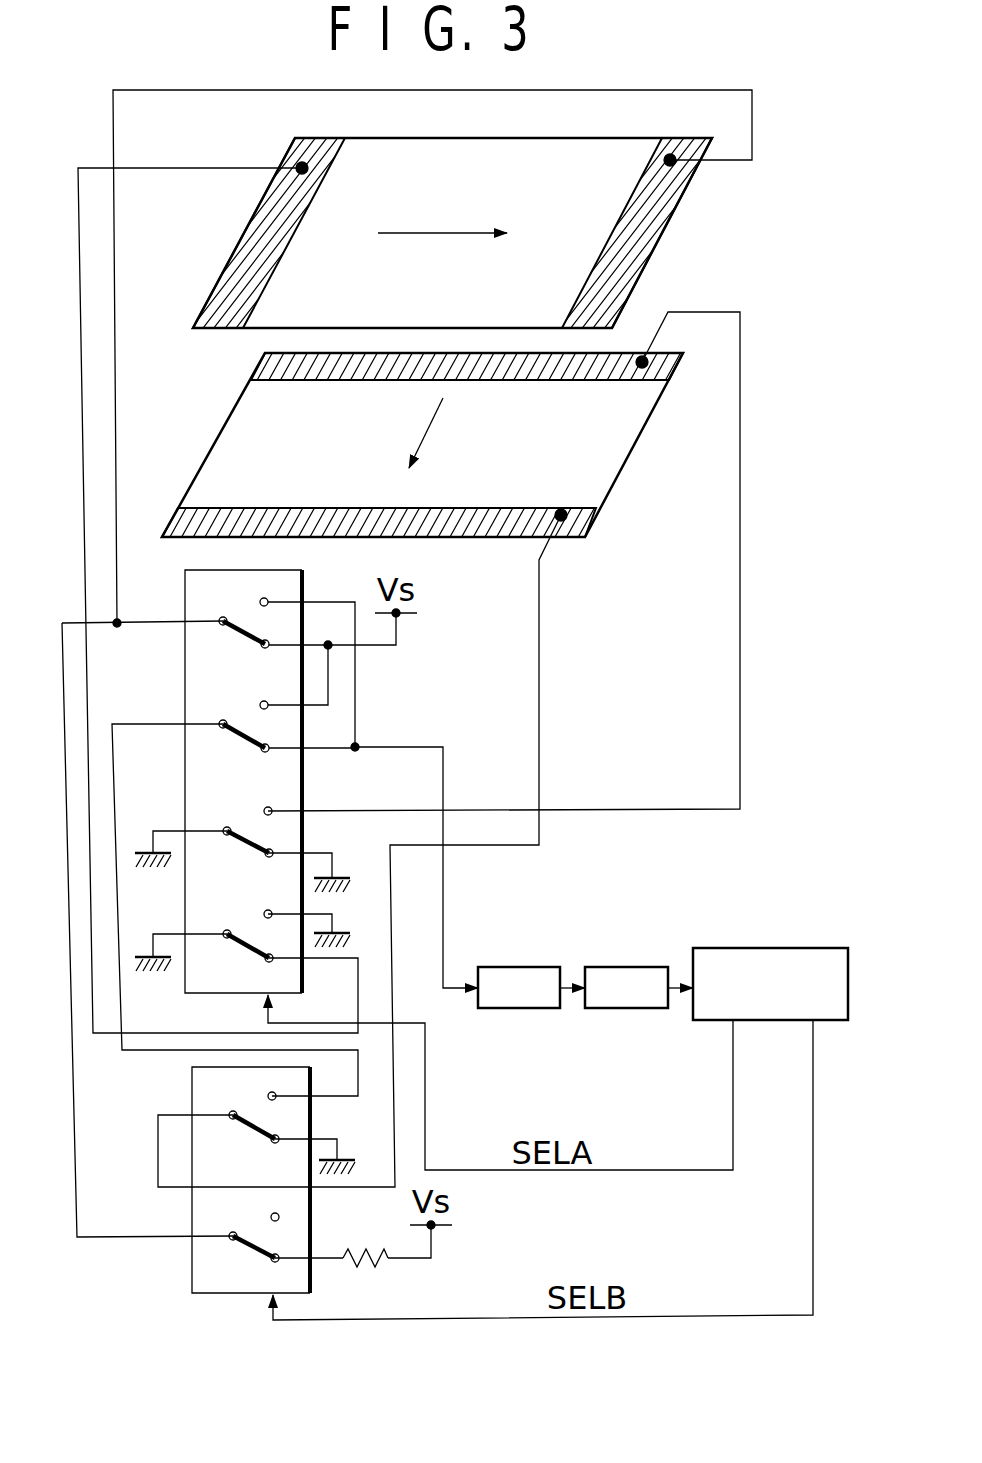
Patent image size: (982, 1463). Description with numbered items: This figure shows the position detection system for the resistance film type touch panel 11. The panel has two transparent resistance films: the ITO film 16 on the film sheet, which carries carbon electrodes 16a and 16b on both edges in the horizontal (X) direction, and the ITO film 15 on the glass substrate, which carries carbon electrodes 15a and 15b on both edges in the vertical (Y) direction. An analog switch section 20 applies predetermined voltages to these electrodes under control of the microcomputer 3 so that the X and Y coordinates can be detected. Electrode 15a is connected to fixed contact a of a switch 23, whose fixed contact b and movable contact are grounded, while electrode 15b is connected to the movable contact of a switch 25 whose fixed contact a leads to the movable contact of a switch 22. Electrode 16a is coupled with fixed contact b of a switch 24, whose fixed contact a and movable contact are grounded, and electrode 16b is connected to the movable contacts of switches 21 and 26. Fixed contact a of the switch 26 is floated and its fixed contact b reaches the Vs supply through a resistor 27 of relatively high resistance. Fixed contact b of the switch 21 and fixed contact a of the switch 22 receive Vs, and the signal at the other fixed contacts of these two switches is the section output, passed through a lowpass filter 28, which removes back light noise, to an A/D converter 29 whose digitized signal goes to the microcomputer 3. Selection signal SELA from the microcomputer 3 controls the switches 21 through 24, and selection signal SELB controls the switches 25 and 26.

The touch panel 11 is at (670, 247).
The ITO film 16 is at (485, 177).
The electrode 16a is at (293, 152).
The electrode 16b is at (670, 158).
The ITO film 15 is at (612, 459).
The electrode 15a is at (260, 366).
The electrode 15b is at (587, 518).
The analog switch section 20 is at (395, 736).
The switch 21 is at (200, 675).
The switch 22 is at (200, 778).
The switch 23 is at (204, 883).
The switch 24 is at (204, 985).
The switch 25 is at (208, 1165).
The switch 26 is at (210, 1287).
The resistor 27 is at (380, 1264).
The lowpass filter 28 is at (518, 965).
The A/D converter 29 is at (620, 965).
The microcomputer 3 is at (758, 948).